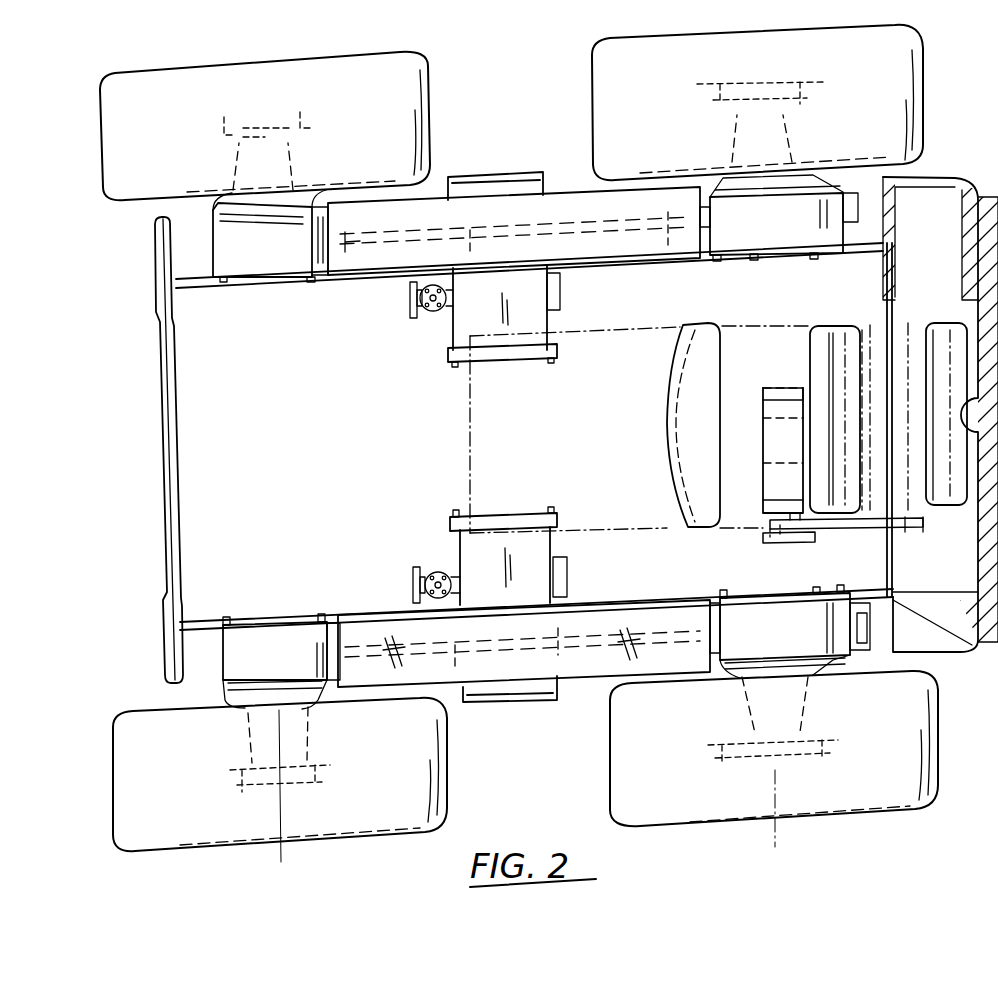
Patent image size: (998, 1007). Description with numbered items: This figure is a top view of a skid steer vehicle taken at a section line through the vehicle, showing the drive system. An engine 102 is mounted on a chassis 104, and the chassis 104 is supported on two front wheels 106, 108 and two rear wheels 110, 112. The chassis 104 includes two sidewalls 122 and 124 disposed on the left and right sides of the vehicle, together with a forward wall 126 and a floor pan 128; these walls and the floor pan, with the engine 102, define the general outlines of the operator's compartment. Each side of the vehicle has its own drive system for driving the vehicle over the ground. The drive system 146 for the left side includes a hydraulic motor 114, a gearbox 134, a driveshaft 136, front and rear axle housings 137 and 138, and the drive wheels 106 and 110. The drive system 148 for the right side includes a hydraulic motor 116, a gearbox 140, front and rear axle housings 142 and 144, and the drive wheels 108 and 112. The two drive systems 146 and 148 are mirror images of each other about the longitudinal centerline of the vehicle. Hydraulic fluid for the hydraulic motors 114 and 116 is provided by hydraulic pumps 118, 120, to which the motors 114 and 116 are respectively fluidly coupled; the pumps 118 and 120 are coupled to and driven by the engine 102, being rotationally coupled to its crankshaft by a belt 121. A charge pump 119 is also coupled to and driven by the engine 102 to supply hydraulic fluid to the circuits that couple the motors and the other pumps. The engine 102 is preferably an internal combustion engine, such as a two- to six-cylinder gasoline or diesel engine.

The engine 102 is at (832, 326).
The chassis 104 is at (148, 450).
The front wheel 106 is at (178, 772).
The front wheel 108 is at (265, 126).
The rear wheel 110 is at (672, 724).
The rear wheel 112 is at (640, 110).
The hydraulic motor 114 is at (437, 567).
The hydraulic motor 116 is at (400, 298).
The hydraulic pump 118 is at (766, 486).
The charge pump 119 is at (763, 400).
The hydraulic pump 120 is at (766, 430).
The belt 121 is at (838, 540).
The sidewall 122 is at (201, 628).
The sidewall 124 is at (193, 279).
The forward wall 126 is at (200, 449).
The floor pan 128 is at (307, 444).
The gearbox 134 is at (548, 565).
The driveshaft 136 is at (447, 690).
The front axle housing 137 is at (270, 659).
The rear axle housing 138 is at (780, 635).
The gearbox 140 is at (495, 305).
The front axle housing 142 is at (258, 258).
The rear axle housing 144 is at (770, 229).
The drive system 146 is at (473, 627).
The drive system 148 is at (328, 344).